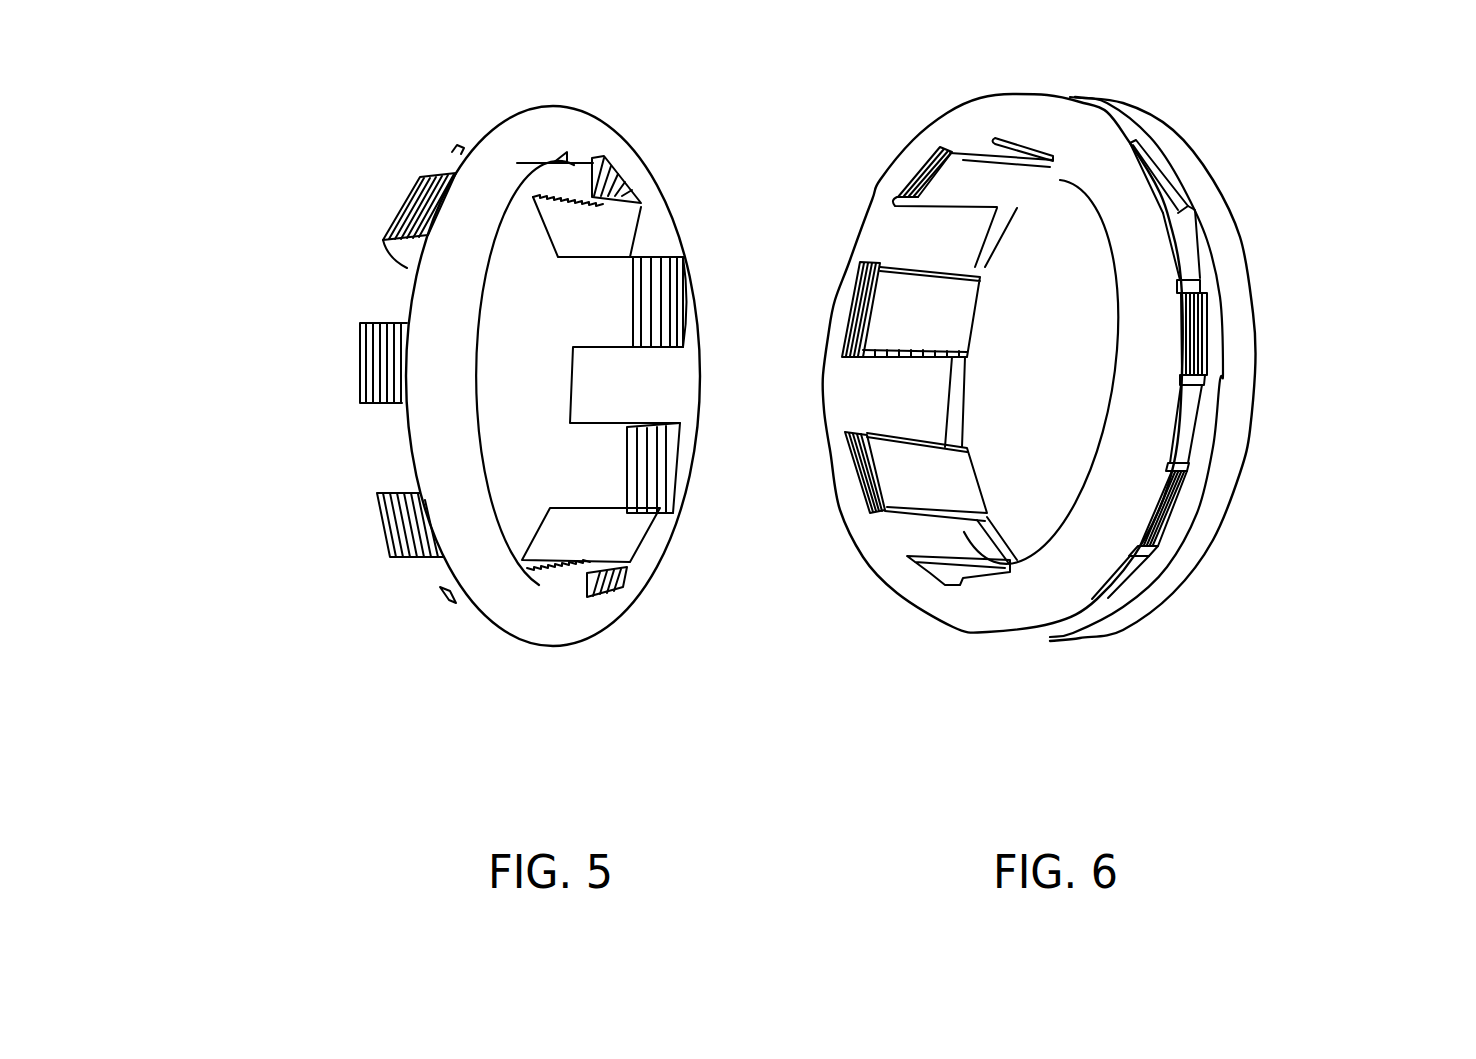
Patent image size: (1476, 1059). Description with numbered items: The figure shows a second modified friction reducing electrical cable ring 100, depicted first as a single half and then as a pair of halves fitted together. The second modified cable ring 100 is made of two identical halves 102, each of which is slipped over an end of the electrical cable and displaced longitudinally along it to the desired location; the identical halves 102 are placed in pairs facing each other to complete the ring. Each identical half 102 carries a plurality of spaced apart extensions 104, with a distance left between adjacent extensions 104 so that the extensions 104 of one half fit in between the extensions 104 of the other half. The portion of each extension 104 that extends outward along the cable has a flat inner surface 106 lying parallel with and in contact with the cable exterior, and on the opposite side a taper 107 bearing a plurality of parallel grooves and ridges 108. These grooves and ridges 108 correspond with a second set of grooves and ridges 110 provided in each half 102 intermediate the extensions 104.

In FIG. 6, the second modified cable ring 100 is at (1200, 662).
In FIG. 5, the identical half 102 is at (585, 137).
In FIG. 6, the identical half 102 is at (1041, 105).
In FIG. 5, the extension 104 is at (393, 533).
In FIG. 5, the flat inner surface 106 is at (630, 383).
In FIG. 5, the taper 107 is at (413, 240).
In FIG. 5, the grooves and ridges 108 is at (405, 197).
In FIG. 5, the second set of grooves and ridges 110 is at (603, 183).
In FIG. 6, the second set of grooves and ridges 110 is at (923, 183).